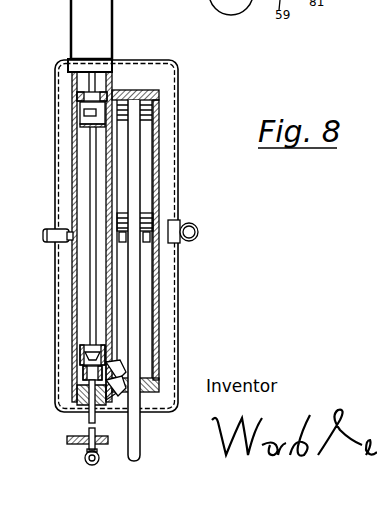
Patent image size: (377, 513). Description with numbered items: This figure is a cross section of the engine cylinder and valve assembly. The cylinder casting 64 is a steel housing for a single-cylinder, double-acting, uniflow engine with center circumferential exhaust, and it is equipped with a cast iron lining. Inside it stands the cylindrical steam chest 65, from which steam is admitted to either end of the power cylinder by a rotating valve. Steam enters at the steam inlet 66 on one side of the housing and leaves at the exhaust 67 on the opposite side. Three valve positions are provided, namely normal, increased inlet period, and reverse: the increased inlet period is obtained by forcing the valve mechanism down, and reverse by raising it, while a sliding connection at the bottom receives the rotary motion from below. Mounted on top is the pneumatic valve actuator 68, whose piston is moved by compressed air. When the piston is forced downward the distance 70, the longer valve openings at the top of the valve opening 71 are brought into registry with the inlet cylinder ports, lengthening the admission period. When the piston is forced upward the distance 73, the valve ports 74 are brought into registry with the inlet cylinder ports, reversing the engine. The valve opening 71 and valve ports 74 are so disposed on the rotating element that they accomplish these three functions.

The cylinder casting 64 is at (162, 291).
The cylindrical steam chest 65 is at (83, 188).
The steam inlet 66 is at (43, 236).
The exhaust 67 is at (200, 232).
The pneumatic valve actuator 68 is at (90, 36).
The downward piston travel distance 70 is at (83, 391).
The valve opening 71 is at (80, 354).
The upward piston travel distance 73 is at (80, 88).
The valve ports 74 is at (80, 113).